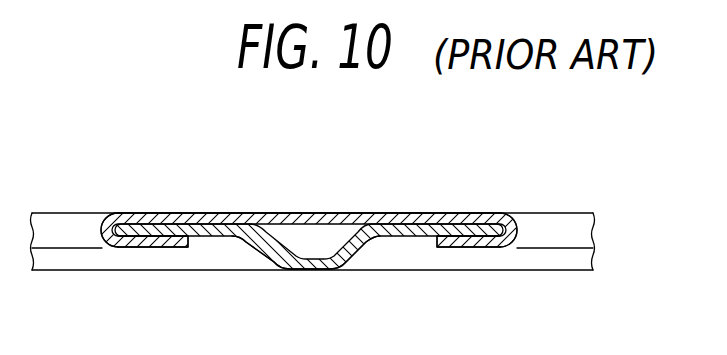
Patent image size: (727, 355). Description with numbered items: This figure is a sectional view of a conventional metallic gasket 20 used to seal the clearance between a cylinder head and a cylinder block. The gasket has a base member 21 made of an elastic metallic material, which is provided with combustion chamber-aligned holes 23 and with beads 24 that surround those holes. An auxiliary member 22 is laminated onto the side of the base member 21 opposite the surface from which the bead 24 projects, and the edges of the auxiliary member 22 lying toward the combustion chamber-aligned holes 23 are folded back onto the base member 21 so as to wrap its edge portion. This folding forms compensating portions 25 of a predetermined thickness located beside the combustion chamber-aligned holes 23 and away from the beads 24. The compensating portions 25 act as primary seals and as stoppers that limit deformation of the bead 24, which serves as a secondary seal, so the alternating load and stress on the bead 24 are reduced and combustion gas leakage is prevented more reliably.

The metallic gasket 20 is at (398, 192).
The base member 21 is at (398, 238).
The auxiliary member 22 is at (272, 213).
The combustion chamber-aligned hole 23 is at (100, 214).
The bead 24 is at (291, 269).
The compensating portion 25 is at (142, 247).